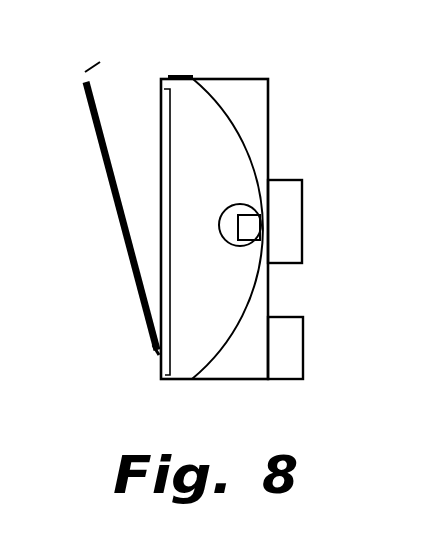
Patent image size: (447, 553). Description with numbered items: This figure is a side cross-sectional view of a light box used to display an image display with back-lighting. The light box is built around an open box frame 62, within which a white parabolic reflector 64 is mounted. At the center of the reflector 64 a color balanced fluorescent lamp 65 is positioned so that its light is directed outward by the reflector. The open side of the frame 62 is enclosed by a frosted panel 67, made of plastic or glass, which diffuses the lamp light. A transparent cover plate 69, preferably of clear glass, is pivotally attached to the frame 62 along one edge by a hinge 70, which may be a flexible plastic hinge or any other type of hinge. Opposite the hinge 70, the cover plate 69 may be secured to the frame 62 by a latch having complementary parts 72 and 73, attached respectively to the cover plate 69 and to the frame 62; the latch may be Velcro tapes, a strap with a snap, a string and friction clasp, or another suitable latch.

The open box frame 62 is at (268, 132).
The white parabolic reflector 64 is at (236, 130).
The fluorescent lamp 65 is at (246, 204).
The frosted panel 67 is at (160, 152).
The transparent cover plate 69 is at (117, 207).
The hinge 70 is at (157, 353).
The latch part 72 is at (85, 72).
The latch part 73 is at (182, 76).